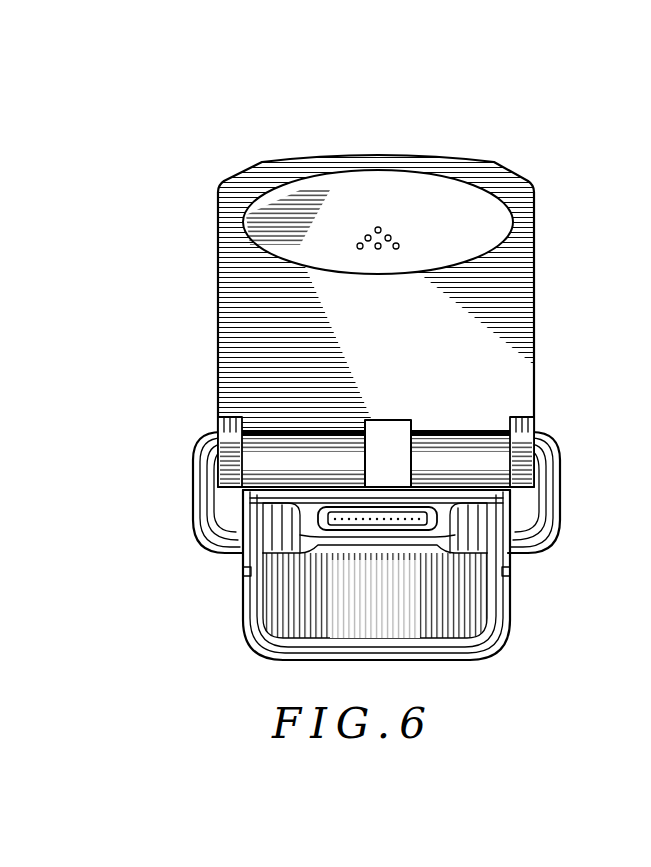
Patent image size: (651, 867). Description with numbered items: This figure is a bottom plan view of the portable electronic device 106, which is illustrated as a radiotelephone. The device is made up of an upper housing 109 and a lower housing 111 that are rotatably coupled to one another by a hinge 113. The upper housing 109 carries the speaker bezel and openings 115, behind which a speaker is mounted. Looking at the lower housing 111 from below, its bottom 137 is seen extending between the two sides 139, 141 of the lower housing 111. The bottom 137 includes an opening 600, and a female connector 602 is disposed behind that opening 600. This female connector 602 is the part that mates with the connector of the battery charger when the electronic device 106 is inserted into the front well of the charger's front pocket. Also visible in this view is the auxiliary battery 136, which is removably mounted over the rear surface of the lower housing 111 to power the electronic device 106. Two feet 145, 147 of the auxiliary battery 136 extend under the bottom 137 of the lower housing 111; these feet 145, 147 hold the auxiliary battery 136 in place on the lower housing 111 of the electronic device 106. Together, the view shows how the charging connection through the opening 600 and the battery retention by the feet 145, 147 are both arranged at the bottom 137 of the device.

The electronic device 106 is at (176, 282).
The upper housing 109 is at (222, 188).
The speaker bezel and openings 115 is at (440, 186).
The hinge 113 is at (228, 430).
The lower housing 111 is at (224, 493).
The side 139 is at (220, 512).
The side 141 is at (537, 510).
The foot 145 is at (262, 532).
The foot 147 is at (478, 517).
The opening 600 is at (320, 528).
The female connector 602 is at (432, 528).
The bottom 137 is at (443, 513).
The auxiliary battery 136 is at (253, 637).